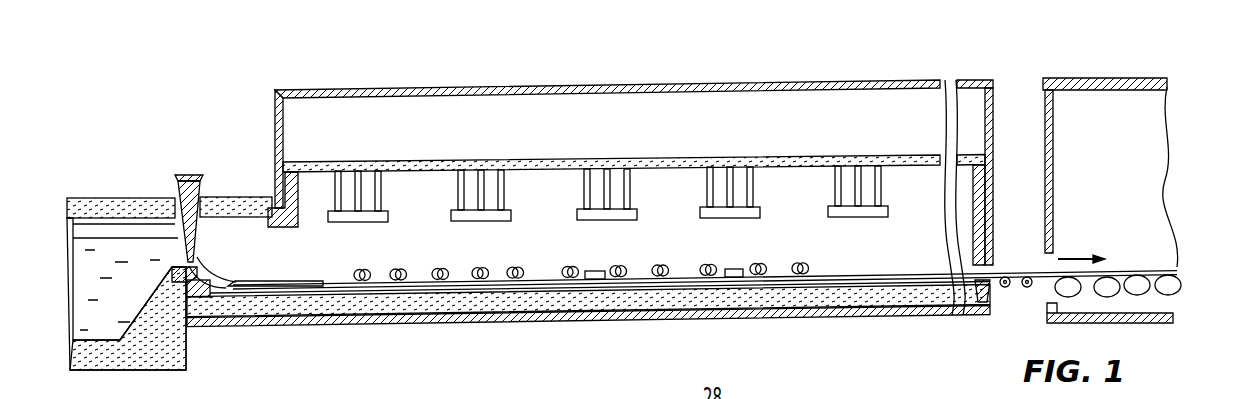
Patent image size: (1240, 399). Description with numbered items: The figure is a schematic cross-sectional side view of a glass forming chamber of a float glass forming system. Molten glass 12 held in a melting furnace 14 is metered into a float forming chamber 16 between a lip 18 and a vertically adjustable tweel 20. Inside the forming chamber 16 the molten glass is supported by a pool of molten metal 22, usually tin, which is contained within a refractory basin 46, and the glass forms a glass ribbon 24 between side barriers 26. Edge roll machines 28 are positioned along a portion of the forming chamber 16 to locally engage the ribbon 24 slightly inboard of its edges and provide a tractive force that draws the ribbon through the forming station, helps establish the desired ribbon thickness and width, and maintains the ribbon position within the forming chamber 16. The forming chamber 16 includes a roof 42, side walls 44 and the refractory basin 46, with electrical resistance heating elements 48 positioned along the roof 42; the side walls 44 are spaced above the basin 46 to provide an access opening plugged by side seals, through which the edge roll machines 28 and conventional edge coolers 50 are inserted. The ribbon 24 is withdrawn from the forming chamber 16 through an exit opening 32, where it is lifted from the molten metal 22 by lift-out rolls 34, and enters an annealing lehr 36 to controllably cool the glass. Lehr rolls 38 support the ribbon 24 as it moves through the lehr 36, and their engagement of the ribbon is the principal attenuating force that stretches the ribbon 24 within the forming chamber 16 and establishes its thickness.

The molten glass 12 is at (113, 311).
The melting furnace 14 is at (104, 197).
The float forming chamber 16 is at (623, 83).
The lip 18 is at (180, 254).
The vertically adjustable tweel 20 is at (203, 183).
The pool of molten metal 22 is at (465, 295).
The glass ribbon 24 is at (864, 275).
The side barriers 26 is at (275, 280).
The edge roll machines 28 is at (512, 267).
The exit opening 32 is at (993, 302).
The lift-out rolls 34 is at (1027, 288).
The annealing lehr 36 is at (1078, 78).
The lehr rolls 38 is at (1137, 295).
The roof 42 is at (505, 160).
The side walls 44 is at (557, 206).
The refractory basin 46 is at (355, 325).
The electrical resistance heating elements 48 is at (383, 190).
The edge coolers 50 is at (595, 283).